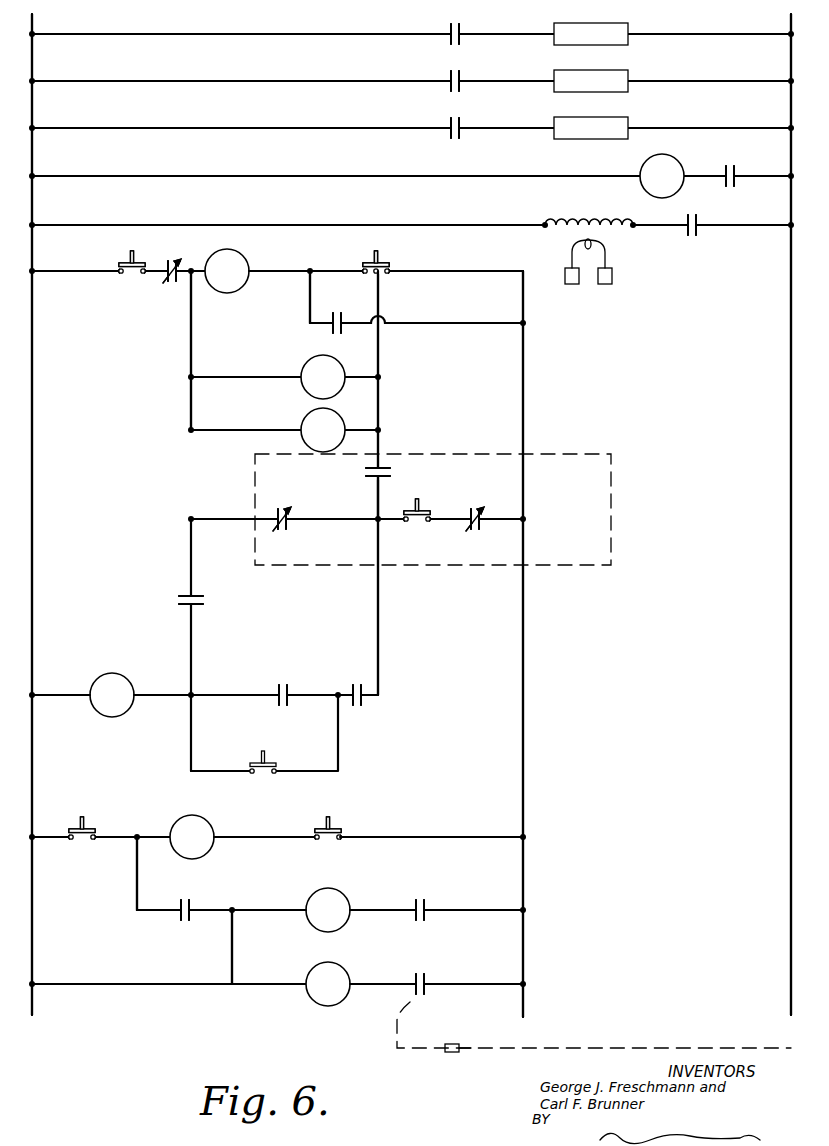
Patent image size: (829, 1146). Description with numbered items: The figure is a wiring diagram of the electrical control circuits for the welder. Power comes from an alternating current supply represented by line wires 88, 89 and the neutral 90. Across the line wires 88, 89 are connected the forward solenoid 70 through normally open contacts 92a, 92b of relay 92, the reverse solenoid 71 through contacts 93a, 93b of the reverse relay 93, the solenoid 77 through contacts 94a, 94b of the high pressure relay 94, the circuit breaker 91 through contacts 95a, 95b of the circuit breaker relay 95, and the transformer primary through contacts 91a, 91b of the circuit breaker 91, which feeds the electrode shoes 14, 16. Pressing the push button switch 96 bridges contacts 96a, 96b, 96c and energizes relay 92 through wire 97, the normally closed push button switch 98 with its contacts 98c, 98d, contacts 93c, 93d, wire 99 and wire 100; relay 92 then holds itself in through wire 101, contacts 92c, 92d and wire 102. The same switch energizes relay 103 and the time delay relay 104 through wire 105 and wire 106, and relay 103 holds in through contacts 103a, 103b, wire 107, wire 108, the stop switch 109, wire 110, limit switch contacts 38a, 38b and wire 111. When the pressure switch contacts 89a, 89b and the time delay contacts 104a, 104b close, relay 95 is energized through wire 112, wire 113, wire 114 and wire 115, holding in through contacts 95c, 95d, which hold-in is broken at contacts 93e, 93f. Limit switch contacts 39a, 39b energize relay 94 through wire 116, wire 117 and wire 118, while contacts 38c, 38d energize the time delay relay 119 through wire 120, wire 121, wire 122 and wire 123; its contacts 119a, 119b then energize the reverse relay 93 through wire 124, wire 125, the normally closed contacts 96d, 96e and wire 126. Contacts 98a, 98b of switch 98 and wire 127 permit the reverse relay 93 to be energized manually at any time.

The line wire 88 is at (34, 28).
The line wire 89 is at (791, 30).
The normally open contact of relay 92 92a is at (450, 31).
The normally open contact of relay 92 92b is at (461, 30).
The solenoid 70 is at (626, 32).
The solenoid 71 is at (627, 80).
The solenoid 77 is at (627, 127).
The normally open contact of relay 93 93a is at (451, 79).
The normally open contact of relay 93 93b is at (463, 80).
The normally open contact of relay 94 94a is at (450, 126).
The normally open contact of relay 94 94b is at (463, 128).
The circuit breaker 91 is at (675, 162).
The normally open contact of relay 95 95a is at (726, 186).
The normally open contact of relay 95 95b is at (735, 184).
The normally open contact of circuit breaker 91 91a is at (688, 235).
The normally open contact of circuit breaker 91 91b is at (697, 237).
The electrode shoe 14 is at (570, 284).
The electrode 16 is at (607, 284).
The neutral 90 is at (523, 268).
The wire 97 is at (59, 276).
The push button switch 98 is at (127, 281).
The normally closed contact of switch 98 98c is at (121, 268).
The normally closed contact of switch 98 98d is at (152, 277).
The normally closed contact of relay 93 93c is at (168, 263).
The normally closed contact of relay 93 93d is at (178, 262).
The relay 92 is at (241, 261).
The wire 99 is at (275, 276).
The push button switch 96 is at (380, 262).
The contact of switch 96 96a is at (364, 270).
The contact of switch 96 96b is at (376, 276).
The contact of switch 96 96c is at (387, 273).
The wire 100 is at (486, 276).
The wire 101 is at (310, 310).
The contact of relay 92 92c is at (332, 335).
The contact of relay 92 92d is at (342, 334).
The wire 105 is at (191, 358).
The time delay relay 104 is at (300, 377).
The relay 103 is at (301, 426).
The wire 102 is at (461, 327).
The wire 106 is at (380, 406).
The normally open contact of relay 103 103a is at (382, 470).
The normally open contact of relay 103 103b is at (366, 477).
The wire 107 is at (378, 503).
The wire 110 is at (432, 516).
The wire 108 is at (392, 528).
The push button stop switch 109 is at (418, 530).
The normally closed limit switch contact 38a is at (470, 512).
The normally closed limit switch contact 38b is at (481, 528).
The wire 111 is at (503, 517).
The contact of relay 93 93e is at (275, 525).
The contact of relay 93 93f is at (290, 528).
The normally open contact of relay 95 95c is at (186, 592).
The normally open contact of relay 95 95d is at (195, 605).
The wire 115 is at (380, 625).
The circuit breaker relay 95 is at (125, 686).
The wire 112 is at (63, 700).
The wire 113 is at (218, 700).
The wire 114 is at (314, 700).
The normally open contact of relay 104 104a is at (278, 686).
The normally open contact of relay 104 104b is at (290, 685).
The pressure switch contact 89a is at (352, 688).
The pressure switch contact 89b is at (366, 700).
The wire 127 is at (262, 778).
The normally open contact of switch 98 98a is at (73, 843).
The normally open contact of switch 98 98b is at (92, 843).
The reverse relay 93 is at (212, 840).
The wire 125 is at (275, 835).
The normally closed contact of switch 96 96d is at (326, 832).
The normally closed contact of switch 96 96e is at (339, 837).
The wire 126 is at (410, 836).
The time delay relay 119 is at (342, 893).
The normally open contact of relay 119 119a is at (180, 922).
The normally open contact of relay 119 119b is at (190, 912).
The wire 124 is at (137, 903).
The wire 121 is at (277, 912).
The wire 122 is at (381, 912).
The normally open contact of switch 38 38c is at (416, 905).
The normally open contact of switch 38 38d is at (425, 908).
The wire 123 is at (505, 910).
The wire 120 is at (232, 972).
The high pressure relay 94 is at (344, 969).
The wire 117 is at (370, 988).
The normally open contact of switch 39 39a is at (415, 975).
The normally open contact of switch 39 39b is at (425, 980).
The wire 118 is at (483, 988).
The wire 116 is at (141, 988).